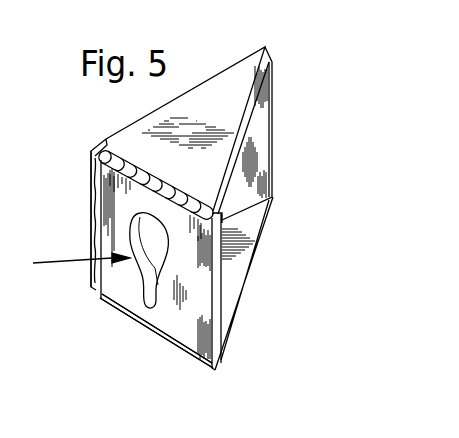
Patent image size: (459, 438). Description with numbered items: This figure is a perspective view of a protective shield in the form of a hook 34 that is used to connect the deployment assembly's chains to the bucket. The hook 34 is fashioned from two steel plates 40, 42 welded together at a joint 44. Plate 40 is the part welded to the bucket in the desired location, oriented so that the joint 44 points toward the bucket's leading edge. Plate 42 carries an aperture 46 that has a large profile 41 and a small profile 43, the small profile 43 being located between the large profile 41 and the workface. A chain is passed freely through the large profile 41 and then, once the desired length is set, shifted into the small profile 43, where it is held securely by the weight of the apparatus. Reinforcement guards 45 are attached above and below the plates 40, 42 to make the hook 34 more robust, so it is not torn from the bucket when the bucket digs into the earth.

The hook 34 is at (306, 99).
The plate 40 is at (260, 142).
The large profile 41 is at (130, 229).
The plate 42 is at (188, 325).
The small profile 43 is at (128, 310).
The joint 44 is at (96, 201).
The reinforcement guard 45 is at (237, 79).
The aperture 46 is at (66, 262).